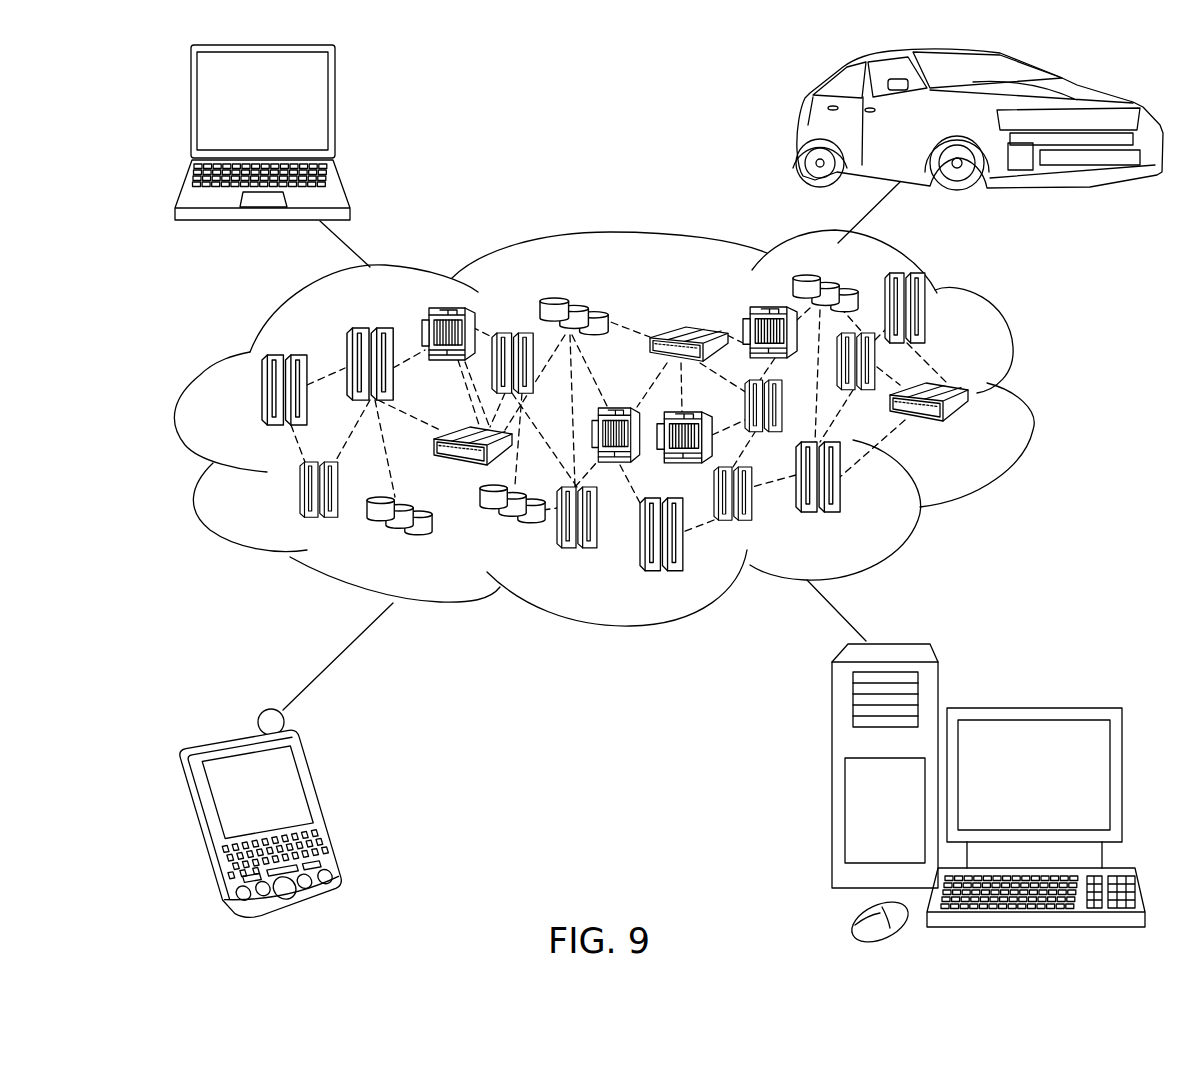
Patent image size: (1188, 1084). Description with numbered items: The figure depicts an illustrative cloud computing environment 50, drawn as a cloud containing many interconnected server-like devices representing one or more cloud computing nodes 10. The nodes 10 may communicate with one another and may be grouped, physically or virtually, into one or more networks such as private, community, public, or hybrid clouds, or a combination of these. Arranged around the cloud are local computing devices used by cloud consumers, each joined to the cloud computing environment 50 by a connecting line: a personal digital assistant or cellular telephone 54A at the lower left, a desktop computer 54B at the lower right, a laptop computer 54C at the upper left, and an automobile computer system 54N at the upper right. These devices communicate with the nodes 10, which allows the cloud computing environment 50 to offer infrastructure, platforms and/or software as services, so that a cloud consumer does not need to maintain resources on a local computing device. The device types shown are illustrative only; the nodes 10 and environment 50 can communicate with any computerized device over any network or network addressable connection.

The cloud computing node 10 is at (970, 432).
The cloud computing environment 50 is at (1043, 398).
The personal digital assistant or cellular telephone 54A is at (322, 805).
The desktop computer 54B is at (1033, 705).
The laptop computer 54C is at (340, 110).
The automobile computer system 54N is at (800, 127).